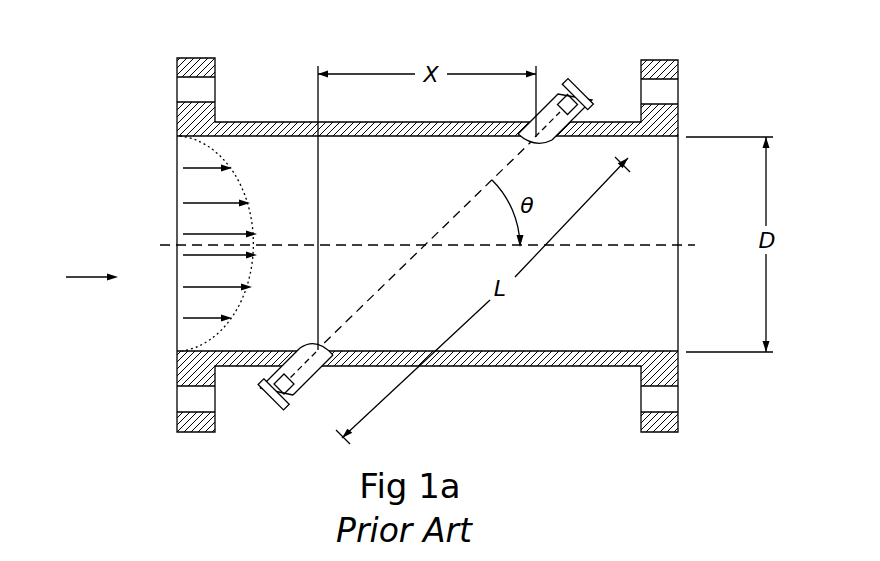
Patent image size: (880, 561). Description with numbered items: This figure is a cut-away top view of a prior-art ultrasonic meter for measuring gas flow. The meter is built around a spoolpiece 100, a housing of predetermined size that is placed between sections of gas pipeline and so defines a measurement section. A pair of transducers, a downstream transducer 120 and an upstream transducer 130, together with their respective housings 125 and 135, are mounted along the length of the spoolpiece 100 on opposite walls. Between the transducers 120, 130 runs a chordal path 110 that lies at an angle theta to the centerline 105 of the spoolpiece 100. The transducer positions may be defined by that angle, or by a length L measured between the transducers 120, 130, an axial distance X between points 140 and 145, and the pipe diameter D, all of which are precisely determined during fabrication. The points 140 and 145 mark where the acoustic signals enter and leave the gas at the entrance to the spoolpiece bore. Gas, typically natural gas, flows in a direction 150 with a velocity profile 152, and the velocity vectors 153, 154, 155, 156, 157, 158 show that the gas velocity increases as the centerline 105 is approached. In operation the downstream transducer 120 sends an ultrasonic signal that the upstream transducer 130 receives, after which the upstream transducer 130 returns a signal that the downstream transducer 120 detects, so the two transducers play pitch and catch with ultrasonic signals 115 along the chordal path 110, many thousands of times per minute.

The spoolpiece 100 is at (200, 58).
The centerline 105 is at (688, 247).
The path 110 is at (470, 202).
The ultrasonic signals 115 is at (367, 302).
The downstream transducer 120 is at (567, 100).
The transducer housing 125 is at (552, 92).
The upstream transducer 130 is at (301, 382).
The transducer housing 135 is at (314, 386).
The point 140 is at (537, 140).
The point 145 is at (307, 348).
The flow direction 150 is at (83, 279).
The velocity profile 152 is at (243, 186).
The velocity vector 153 is at (193, 166).
The velocity vector 154 is at (195, 202).
The velocity vector 155 is at (210, 233).
The velocity vector 156 is at (207, 261).
The velocity vector 157 is at (197, 288).
The velocity vector 158 is at (197, 321).